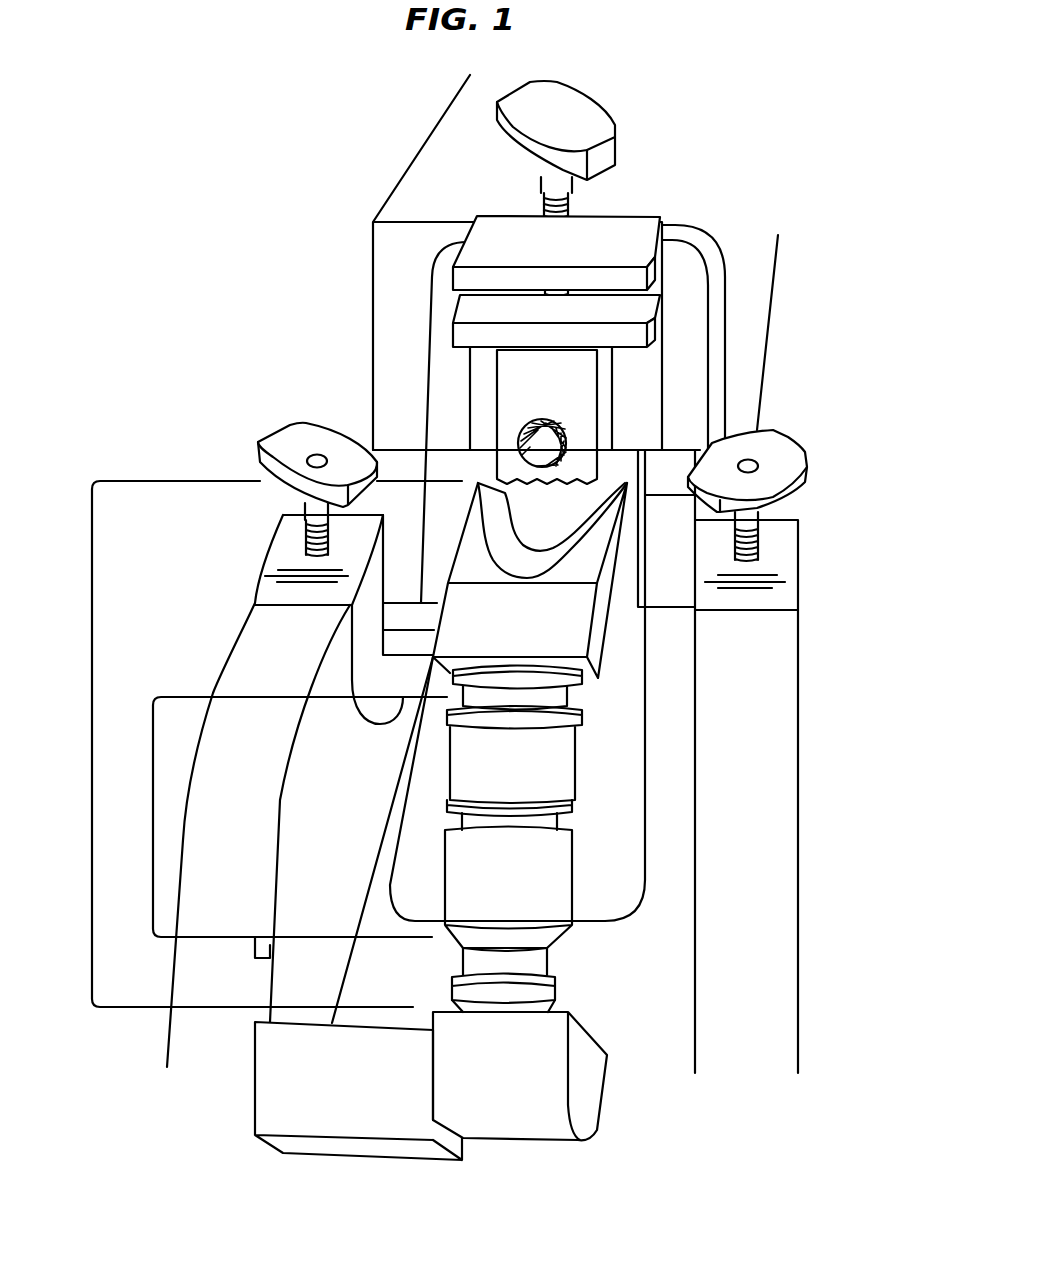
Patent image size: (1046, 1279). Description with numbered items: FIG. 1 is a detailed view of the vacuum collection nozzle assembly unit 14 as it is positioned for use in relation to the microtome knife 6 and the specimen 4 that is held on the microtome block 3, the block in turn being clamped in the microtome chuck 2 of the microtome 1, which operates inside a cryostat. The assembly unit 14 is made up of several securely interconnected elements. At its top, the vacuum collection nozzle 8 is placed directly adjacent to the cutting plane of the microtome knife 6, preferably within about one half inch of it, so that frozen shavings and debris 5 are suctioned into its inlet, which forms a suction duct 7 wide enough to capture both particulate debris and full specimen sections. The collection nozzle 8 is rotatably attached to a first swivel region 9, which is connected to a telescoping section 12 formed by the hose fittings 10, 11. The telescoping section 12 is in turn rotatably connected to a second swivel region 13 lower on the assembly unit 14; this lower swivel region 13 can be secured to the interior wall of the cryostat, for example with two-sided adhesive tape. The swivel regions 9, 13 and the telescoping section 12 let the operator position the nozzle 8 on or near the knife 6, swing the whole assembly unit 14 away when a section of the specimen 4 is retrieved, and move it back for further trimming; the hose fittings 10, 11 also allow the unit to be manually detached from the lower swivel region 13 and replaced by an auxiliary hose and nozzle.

The microtome 1 is at (798, 597).
The microtome chuck 2 is at (657, 307).
The microtome block 3 is at (602, 375).
The specimen 4 is at (530, 430).
The frozen shavings and debris 5 is at (493, 463).
The microtome knife 6 is at (393, 447).
The suction duct 7 is at (556, 505).
The vacuum collection nozzle 8 is at (598, 625).
The first swivel region 9 is at (570, 677).
The hose fitting 10 is at (568, 755).
The hose fitting 11 is at (562, 853).
The telescoping section 12 is at (153, 800).
The second swivel region 13 is at (587, 1085).
The vacuum collection nozzle assembly unit 14 is at (92, 712).